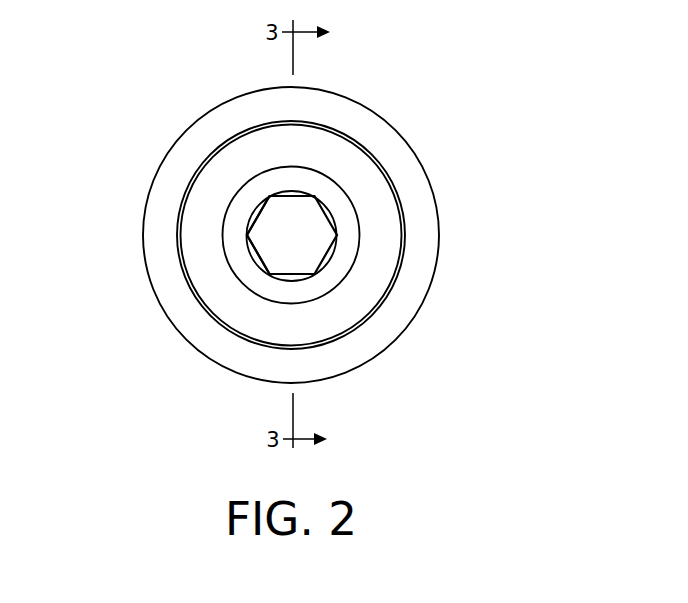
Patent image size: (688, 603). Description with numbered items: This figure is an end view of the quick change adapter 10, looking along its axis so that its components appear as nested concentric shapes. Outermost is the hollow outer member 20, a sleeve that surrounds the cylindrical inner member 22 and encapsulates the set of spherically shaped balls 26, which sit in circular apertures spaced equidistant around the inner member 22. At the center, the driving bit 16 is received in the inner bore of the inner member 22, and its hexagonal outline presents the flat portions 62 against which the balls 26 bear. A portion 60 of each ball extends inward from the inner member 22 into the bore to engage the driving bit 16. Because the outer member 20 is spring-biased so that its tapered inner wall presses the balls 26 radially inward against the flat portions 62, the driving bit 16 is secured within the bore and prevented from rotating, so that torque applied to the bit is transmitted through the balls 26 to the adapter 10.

The quick change adapter 10 is at (208, 358).
The outer member 20 is at (163, 188).
The inner member 22 is at (358, 168).
The spherically shaped balls 26 is at (388, 295).
The driving bit 16 is at (310, 227).
The portion of the balls 60 is at (293, 194).
The flat portion 62 is at (247, 240).